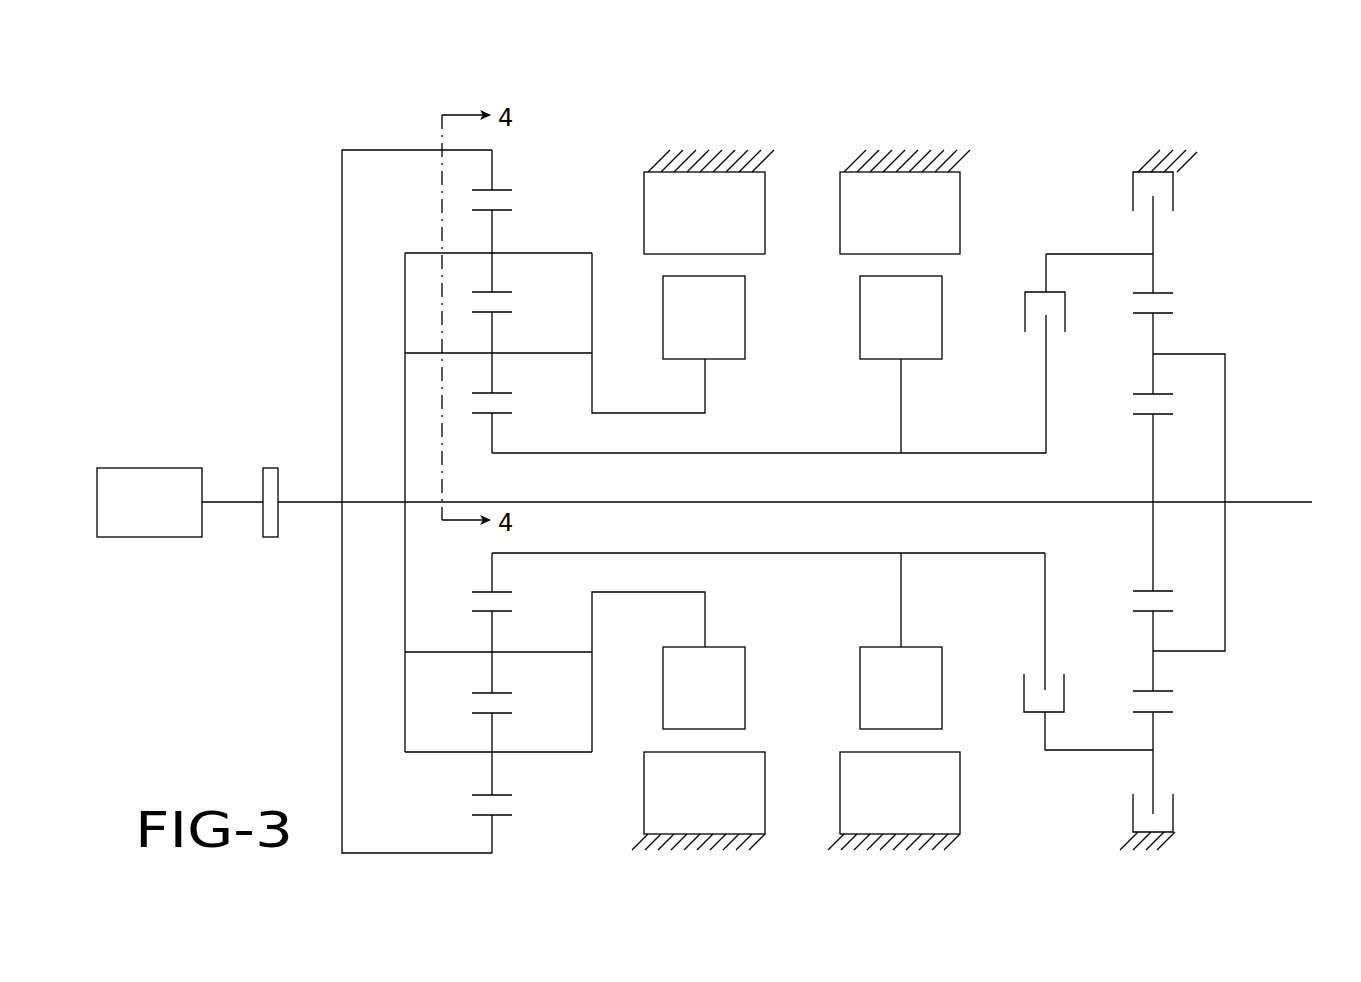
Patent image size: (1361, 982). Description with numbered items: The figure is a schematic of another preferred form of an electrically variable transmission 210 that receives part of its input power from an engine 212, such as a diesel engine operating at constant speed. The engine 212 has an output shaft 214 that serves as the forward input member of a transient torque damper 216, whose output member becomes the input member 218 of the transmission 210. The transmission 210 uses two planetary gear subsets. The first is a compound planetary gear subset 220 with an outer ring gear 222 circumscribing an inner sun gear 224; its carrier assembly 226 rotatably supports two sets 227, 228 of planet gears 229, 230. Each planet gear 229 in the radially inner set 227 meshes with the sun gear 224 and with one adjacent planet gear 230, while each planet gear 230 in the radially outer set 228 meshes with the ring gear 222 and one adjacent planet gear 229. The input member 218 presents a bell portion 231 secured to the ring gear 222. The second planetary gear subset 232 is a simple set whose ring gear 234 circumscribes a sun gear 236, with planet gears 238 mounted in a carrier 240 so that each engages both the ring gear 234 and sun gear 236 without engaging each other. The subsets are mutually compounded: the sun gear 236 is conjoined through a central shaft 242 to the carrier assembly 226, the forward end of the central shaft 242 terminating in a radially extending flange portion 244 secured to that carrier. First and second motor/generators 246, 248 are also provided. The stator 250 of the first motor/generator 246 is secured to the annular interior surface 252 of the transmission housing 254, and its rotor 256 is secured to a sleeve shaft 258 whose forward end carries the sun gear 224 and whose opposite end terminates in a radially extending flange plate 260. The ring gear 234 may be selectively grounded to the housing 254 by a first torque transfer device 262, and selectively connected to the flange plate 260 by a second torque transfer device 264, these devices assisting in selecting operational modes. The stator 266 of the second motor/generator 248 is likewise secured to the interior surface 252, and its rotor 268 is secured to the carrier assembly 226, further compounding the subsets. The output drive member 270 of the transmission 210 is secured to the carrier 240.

The electrically variable transmission 210 is at (290, 158).
The engine 212 is at (137, 485).
The output shaft 214 is at (236, 500).
The transient torque damper 216 is at (270, 520).
The input member 218 is at (315, 503).
The compound planetary gear subset 220 is at (527, 160).
The outer gear member 222 is at (512, 190).
The inner gear member 224 is at (482, 598).
The carrier assembly 226 is at (596, 305).
The radially inner set of planet gears 227 is at (507, 363).
The radially outer set of planet gears 228 is at (506, 232).
The planet gear 229 is at (493, 322).
The planet gear 230 is at (493, 285).
The bell portion 231 is at (378, 150).
The second planetary gear subset 232 is at (1205, 218).
The outer gear member 234 is at (1165, 293).
The inner gear member 236 is at (1142, 410).
The planet gears 238 is at (1158, 340).
The carrier 240 is at (1210, 652).
The central shaft 242 is at (632, 502).
The radially extending flange portion 244 is at (405, 430).
The first motor/generator 246 is at (990, 180).
The second motor/generator 248 is at (780, 197).
The stator 250 is at (900, 503).
The interior surface 252 is at (690, 150).
The transmission housing 254 is at (745, 160).
The rotor 256 is at (901, 502).
The sleeve shaft 258 is at (803, 453).
The radially extending flange plate 260 is at (1046, 380).
The first torque transfer device 262 is at (1133, 185).
The second torque transfer device 264 is at (1025, 312).
The stator 266 is at (704, 503).
The rotor 268 is at (704, 502).
The output drive member 270 is at (1268, 502).